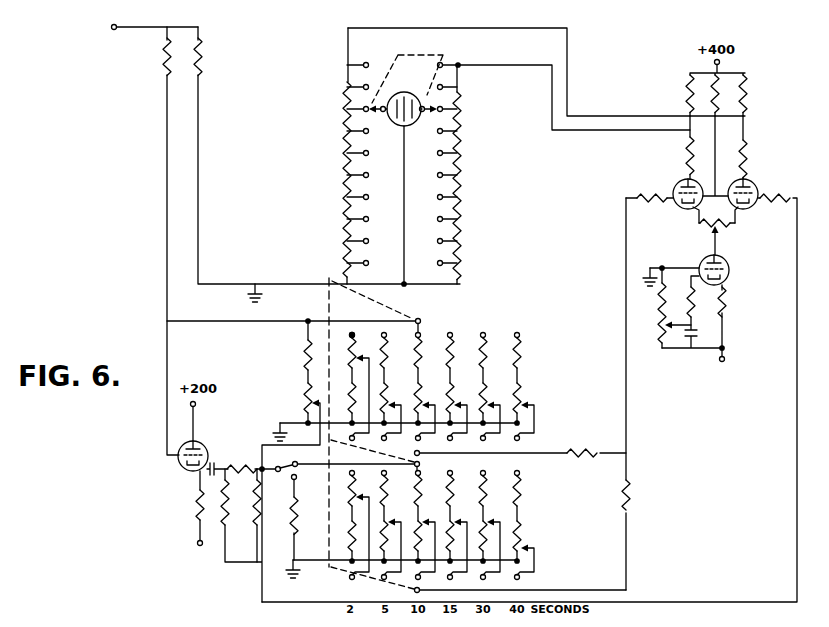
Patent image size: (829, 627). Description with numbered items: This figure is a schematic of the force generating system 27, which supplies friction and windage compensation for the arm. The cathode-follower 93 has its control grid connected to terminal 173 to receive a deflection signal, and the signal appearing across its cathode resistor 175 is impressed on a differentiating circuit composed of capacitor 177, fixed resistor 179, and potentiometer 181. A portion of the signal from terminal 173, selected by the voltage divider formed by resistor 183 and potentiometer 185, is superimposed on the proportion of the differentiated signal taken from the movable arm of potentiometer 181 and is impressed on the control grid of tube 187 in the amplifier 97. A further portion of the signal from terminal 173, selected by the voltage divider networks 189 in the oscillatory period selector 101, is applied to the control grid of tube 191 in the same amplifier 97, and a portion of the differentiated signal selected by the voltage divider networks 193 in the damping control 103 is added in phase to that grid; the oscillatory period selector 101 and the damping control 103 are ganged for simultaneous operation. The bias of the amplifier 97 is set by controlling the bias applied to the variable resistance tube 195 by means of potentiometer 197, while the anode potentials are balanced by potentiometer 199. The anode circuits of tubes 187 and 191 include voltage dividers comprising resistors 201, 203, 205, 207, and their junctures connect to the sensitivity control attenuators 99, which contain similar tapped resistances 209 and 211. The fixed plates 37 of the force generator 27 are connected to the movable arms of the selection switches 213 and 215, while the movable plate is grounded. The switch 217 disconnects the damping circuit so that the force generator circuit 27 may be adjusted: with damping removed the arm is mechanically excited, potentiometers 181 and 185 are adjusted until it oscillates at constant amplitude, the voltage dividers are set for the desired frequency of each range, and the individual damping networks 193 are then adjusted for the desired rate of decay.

The terminal 173 is at (115, 31).
The selection switch 213 is at (378, 98).
The fixed plates 37 is at (416, 95).
The selection switch 215 is at (430, 114).
The force generating system 27 is at (397, 120).
The tapped resistance 209 is at (342, 200).
The tapped resistance 211 is at (460, 196).
The sensitivity control attenuators 99 is at (378, 218).
The resistor 201 is at (685, 93).
The resistor 205 is at (748, 106).
The resistor 203 is at (686, 169).
The resistor 207 is at (748, 151).
The amplifier 97 is at (766, 168).
The tube 191 is at (673, 194).
The tube 187 is at (749, 208).
The potentiometer 199 is at (721, 228).
The variable resistance tube 195 is at (730, 282).
The potentiometer 197 is at (658, 325).
The resistor 183 is at (304, 359).
The potentiometer 185 is at (302, 408).
The oscillatory period selector 101 is at (471, 325).
The voltage divider networks 189 is at (531, 360).
The capacitor 177 is at (212, 460).
The switch 217 is at (297, 462).
The cathode-follower 93 is at (153, 495).
The cathode resistor 175 is at (181, 519).
The fixed resistor 179 is at (224, 496).
The potentiometer 181 is at (248, 531).
The damping control 103 is at (531, 480).
The voltage divider networks 193 is at (451, 509).